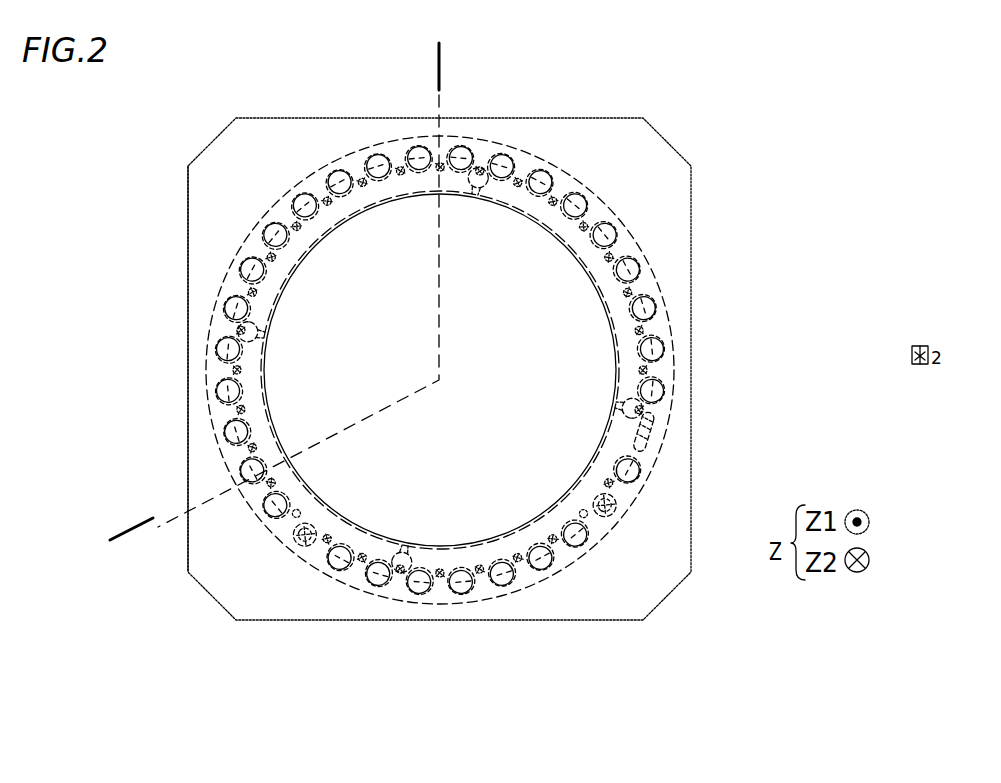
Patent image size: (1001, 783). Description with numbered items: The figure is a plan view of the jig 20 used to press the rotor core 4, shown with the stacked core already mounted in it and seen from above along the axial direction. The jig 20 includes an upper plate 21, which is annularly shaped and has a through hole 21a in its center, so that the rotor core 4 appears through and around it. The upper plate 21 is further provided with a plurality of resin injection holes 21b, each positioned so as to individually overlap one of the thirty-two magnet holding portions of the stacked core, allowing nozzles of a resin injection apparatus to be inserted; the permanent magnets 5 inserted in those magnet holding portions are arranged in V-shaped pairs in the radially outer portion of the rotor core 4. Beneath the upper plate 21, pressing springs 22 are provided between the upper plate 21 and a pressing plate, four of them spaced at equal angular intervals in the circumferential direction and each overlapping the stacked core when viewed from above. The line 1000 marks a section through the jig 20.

The jig 20 is at (167, 130).
The upper plate 21 is at (185, 233).
The through hole 21a is at (273, 385).
The resin injection holes 21b is at (300, 534).
The pressing spring 22 is at (237, 330).
The rotor core 4 is at (596, 192).
The permanent magnet 5 is at (310, 185).
The section line 1000 is at (430, 68).